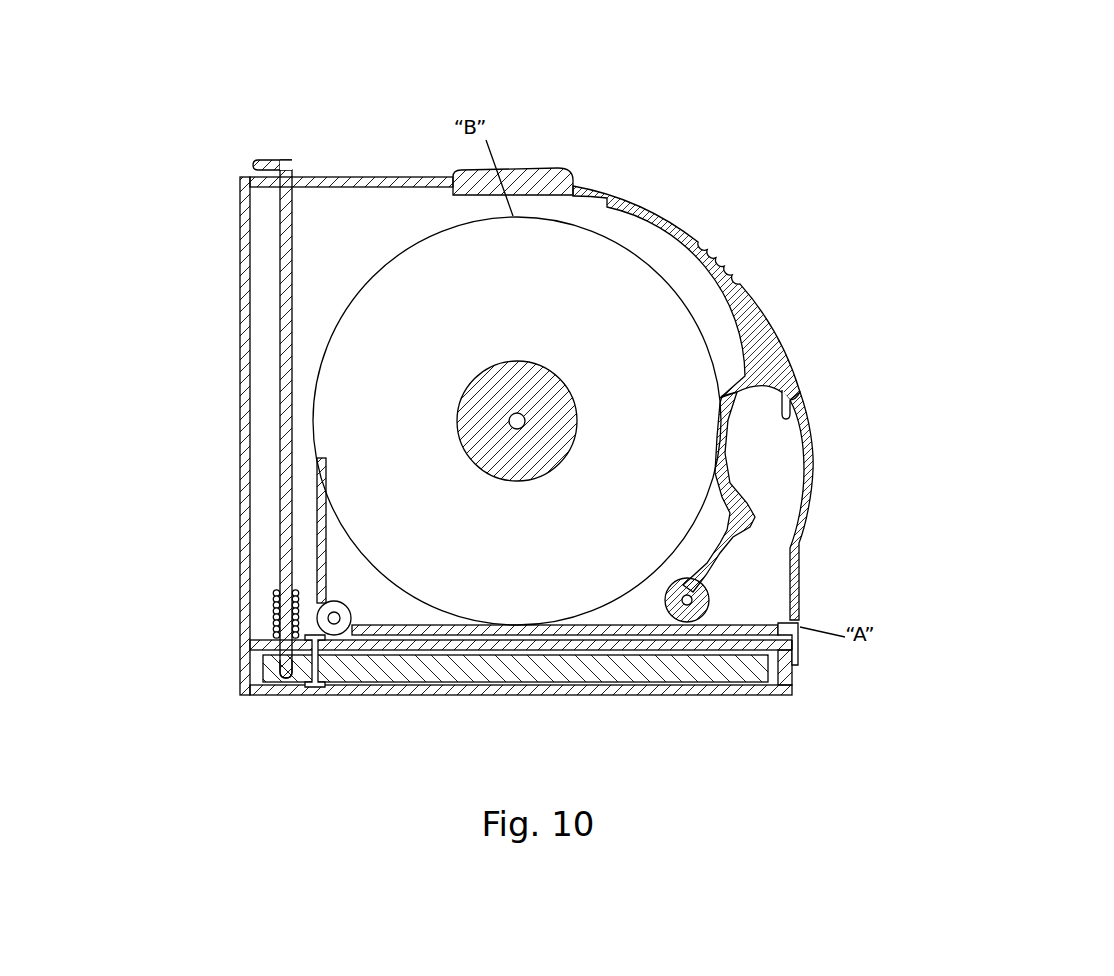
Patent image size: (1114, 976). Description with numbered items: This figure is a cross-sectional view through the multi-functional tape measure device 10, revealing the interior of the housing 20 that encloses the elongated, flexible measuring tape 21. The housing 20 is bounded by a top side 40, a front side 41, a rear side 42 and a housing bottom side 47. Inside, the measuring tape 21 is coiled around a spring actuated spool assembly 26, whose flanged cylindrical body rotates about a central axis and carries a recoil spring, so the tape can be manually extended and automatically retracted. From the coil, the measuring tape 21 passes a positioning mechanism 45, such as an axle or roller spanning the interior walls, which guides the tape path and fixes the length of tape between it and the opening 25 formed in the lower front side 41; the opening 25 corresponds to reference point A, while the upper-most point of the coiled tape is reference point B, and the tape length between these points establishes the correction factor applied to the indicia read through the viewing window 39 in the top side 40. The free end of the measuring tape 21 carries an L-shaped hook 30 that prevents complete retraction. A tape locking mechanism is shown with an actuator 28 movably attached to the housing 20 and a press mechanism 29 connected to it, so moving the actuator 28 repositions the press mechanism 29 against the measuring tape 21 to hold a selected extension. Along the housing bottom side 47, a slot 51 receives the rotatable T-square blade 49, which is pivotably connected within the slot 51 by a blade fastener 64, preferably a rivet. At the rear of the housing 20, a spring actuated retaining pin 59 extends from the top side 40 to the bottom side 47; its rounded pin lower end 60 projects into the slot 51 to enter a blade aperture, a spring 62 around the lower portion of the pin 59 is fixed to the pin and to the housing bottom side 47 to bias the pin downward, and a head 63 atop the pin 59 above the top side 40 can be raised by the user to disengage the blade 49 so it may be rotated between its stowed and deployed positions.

The device 10 is at (953, 93).
The housing 20 is at (238, 333).
The measuring tape 21 is at (607, 630).
The opening 25 is at (799, 620).
The spool assembly 26 is at (580, 242).
The actuator 28 is at (745, 290).
The press mechanism 29 is at (735, 550).
The hook 30 is at (800, 650).
The viewing window 39 is at (532, 168).
The top side 40 is at (372, 178).
The front side 41 is at (815, 474).
The rear side 42 is at (240, 455).
The positioning mechanism 45 is at (346, 612).
The housing bottom side 47 is at (454, 695).
The blade 49 is at (683, 670).
The slot 51 is at (396, 694).
The retaining pin 59 is at (293, 280).
The pin lower end 60 is at (281, 665).
The spring 62 is at (273, 597).
The head 63 is at (268, 159).
The blade fastener 64 is at (312, 690).